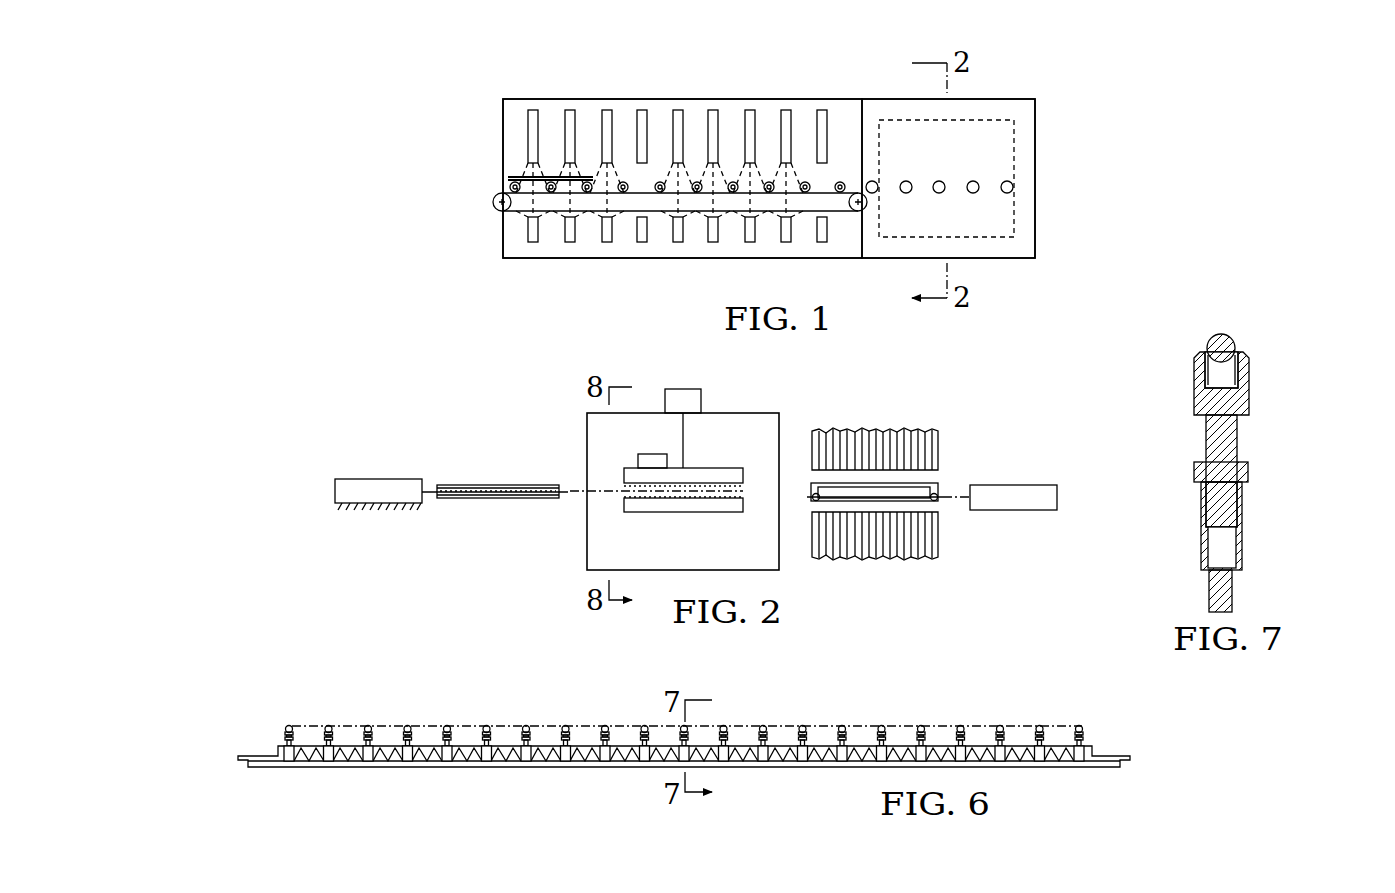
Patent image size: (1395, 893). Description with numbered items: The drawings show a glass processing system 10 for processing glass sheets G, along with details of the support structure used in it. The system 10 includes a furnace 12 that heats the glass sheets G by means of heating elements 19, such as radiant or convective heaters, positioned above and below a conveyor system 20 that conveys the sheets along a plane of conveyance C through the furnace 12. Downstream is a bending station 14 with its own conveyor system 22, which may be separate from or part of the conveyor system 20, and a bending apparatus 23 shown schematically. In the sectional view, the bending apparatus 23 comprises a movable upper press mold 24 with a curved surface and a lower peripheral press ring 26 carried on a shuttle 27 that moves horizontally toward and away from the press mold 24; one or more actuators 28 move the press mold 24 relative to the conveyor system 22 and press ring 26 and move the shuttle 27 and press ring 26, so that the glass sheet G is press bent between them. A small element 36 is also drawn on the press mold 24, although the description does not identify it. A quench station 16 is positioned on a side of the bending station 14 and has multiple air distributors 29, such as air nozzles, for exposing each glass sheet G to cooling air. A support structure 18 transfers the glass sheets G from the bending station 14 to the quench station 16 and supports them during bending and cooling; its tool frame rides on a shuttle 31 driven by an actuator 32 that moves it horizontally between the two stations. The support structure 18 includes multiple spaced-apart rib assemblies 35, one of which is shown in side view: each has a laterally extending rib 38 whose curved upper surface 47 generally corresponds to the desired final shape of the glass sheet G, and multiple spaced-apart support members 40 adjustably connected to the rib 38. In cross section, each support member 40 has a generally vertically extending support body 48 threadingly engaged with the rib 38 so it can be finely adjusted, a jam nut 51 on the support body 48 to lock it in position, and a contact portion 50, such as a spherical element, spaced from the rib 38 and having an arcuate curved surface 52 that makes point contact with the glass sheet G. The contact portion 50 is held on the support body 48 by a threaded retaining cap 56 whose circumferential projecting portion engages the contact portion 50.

In FIG. 1, the glass processing system 10 is at (724, 60).
In FIG. 1, the furnace 12 is at (586, 80).
In FIG. 1, the bending station 14 is at (1008, 83).
In FIG. 2, the bending station 14 is at (745, 385).
In FIG. 2, the quench station 16 is at (918, 418).
In FIG. 2, the support structure 18 is at (943, 472).
In FIG. 1, the heating elements 19 is at (672, 115).
In FIG. 1, the conveyor system 20 is at (551, 220).
In FIG. 1, the conveyor system 22 is at (992, 212).
In FIG. 2, the conveyor system 22 is at (613, 503).
In FIG. 1, the bending apparatus 23 is at (1023, 142).
In FIG. 2, the bending apparatus 23 is at (750, 460).
In FIG. 2, the upper press mold 24 is at (693, 468).
In FIG. 2, the lower peripheral press ring 26 is at (638, 486).
In FIG. 2, the shuttle 27 is at (430, 493).
In FIG. 2, the actuators 28 is at (380, 478).
In FIG. 2, the air distributors 29 is at (878, 430).
In FIG. 2, the shuttle 31 is at (940, 502).
In FIG. 2, the actuator 32 is at (1010, 485).
In FIG. 6, the rib assembly 35 is at (1068, 713).
In FIG. 2, the sensor 36 is at (653, 453).
In FIG. 7, the rib 38 is at (1242, 545).
In FIG. 6, the rib 38 is at (763, 767).
In FIG. 7, the support members 40 is at (1253, 437).
In FIG. 6, the support members 40 is at (512, 735).
In FIG. 6, the curved upper surface 47 is at (783, 743).
In FIG. 7, the support body 48 is at (1249, 402).
In FIG. 7, the contact portion 50 is at (1210, 338).
In FIG. 7, the jam nut 51 is at (1248, 472).
In FIG. 7, the curved surface 52 is at (1221, 333).
In FIG. 7, the retaining cap 56 is at (1248, 377).
In FIG. 1, the glass sheet G is at (552, 177).
In FIG. 6, the glass sheet G is at (315, 723).
In FIG. 1, the plane of conveyance C is at (653, 180).